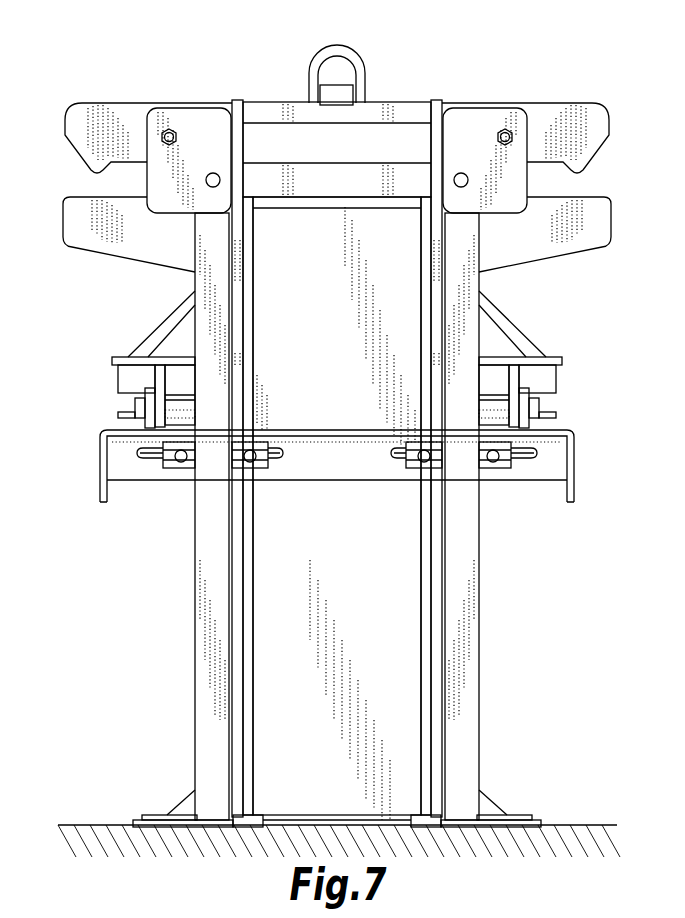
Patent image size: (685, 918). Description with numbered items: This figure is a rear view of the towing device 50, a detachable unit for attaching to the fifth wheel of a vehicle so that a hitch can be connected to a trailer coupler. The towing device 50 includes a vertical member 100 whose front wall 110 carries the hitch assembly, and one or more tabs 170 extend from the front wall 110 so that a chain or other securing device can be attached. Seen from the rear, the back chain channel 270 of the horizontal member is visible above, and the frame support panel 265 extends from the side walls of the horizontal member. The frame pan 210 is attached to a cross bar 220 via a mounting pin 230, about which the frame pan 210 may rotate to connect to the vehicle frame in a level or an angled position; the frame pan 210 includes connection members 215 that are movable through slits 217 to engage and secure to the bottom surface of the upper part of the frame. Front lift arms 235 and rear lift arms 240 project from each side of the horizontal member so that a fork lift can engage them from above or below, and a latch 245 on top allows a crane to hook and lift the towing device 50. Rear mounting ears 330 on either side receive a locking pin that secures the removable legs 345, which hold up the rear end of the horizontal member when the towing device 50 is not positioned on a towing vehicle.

The towing device 50 is at (418, 85).
The vertical member 100 is at (370, 705).
The front wall 110 is at (360, 362).
The tabs 170 is at (162, 818).
The frame pan 210 is at (575, 448).
The connection members 215 is at (175, 470).
The slits 217 is at (148, 455).
The cross bar 220 is at (137, 377).
The mounting pin 230 is at (137, 403).
The front lift arms 235 is at (72, 220).
The rear lift arms 240 is at (72, 135).
The latch 245 is at (310, 75).
The frame support panel 265 is at (553, 353).
The back chain channel 270 is at (316, 190).
The rear mounting ears 330 is at (205, 118).
The legs 345 is at (203, 693).